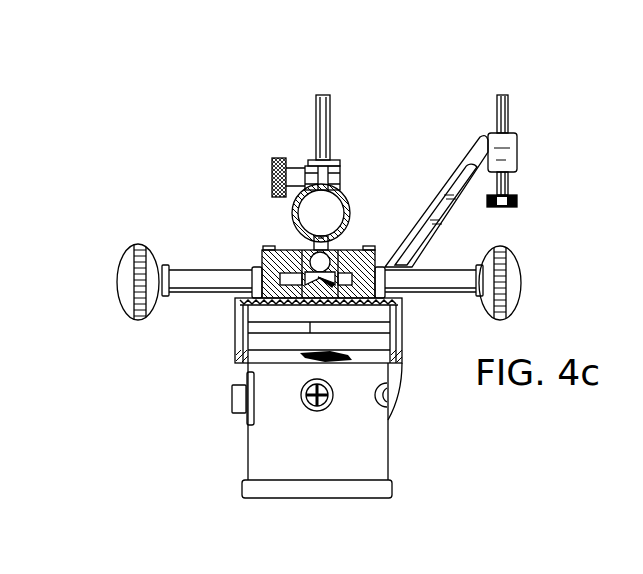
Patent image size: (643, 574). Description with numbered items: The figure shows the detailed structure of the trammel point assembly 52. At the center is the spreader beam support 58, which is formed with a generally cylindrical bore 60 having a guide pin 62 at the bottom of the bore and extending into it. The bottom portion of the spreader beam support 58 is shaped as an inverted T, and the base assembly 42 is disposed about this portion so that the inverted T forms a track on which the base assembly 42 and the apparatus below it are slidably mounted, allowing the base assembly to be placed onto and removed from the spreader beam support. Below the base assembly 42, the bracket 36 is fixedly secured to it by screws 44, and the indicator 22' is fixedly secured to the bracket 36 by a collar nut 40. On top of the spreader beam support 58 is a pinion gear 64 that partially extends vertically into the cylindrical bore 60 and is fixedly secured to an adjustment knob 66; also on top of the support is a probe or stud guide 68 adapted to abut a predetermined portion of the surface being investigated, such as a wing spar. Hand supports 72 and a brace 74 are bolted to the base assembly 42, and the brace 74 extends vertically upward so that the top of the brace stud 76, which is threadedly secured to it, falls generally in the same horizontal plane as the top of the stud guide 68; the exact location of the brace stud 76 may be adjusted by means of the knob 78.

The indicator 22' is at (292, 430).
The bracket 36 is at (235, 318).
The collar nut 40 is at (237, 354).
The base assembly 42 is at (283, 248).
The screws 44 is at (271, 250).
The trammel point assembly 52 is at (199, 111).
The spreader beam support 58 is at (287, 222).
The cylindrical bore 60 is at (331, 224).
The guide pin 62 is at (346, 213).
The pinion gear 64 is at (342, 178).
The adjustment knob 66 is at (276, 167).
The stud guide 68 is at (312, 133).
The hand supports 72 is at (122, 266).
The brace 74 is at (518, 151).
The brace stud 76 is at (514, 104).
The knob 78 is at (519, 201).